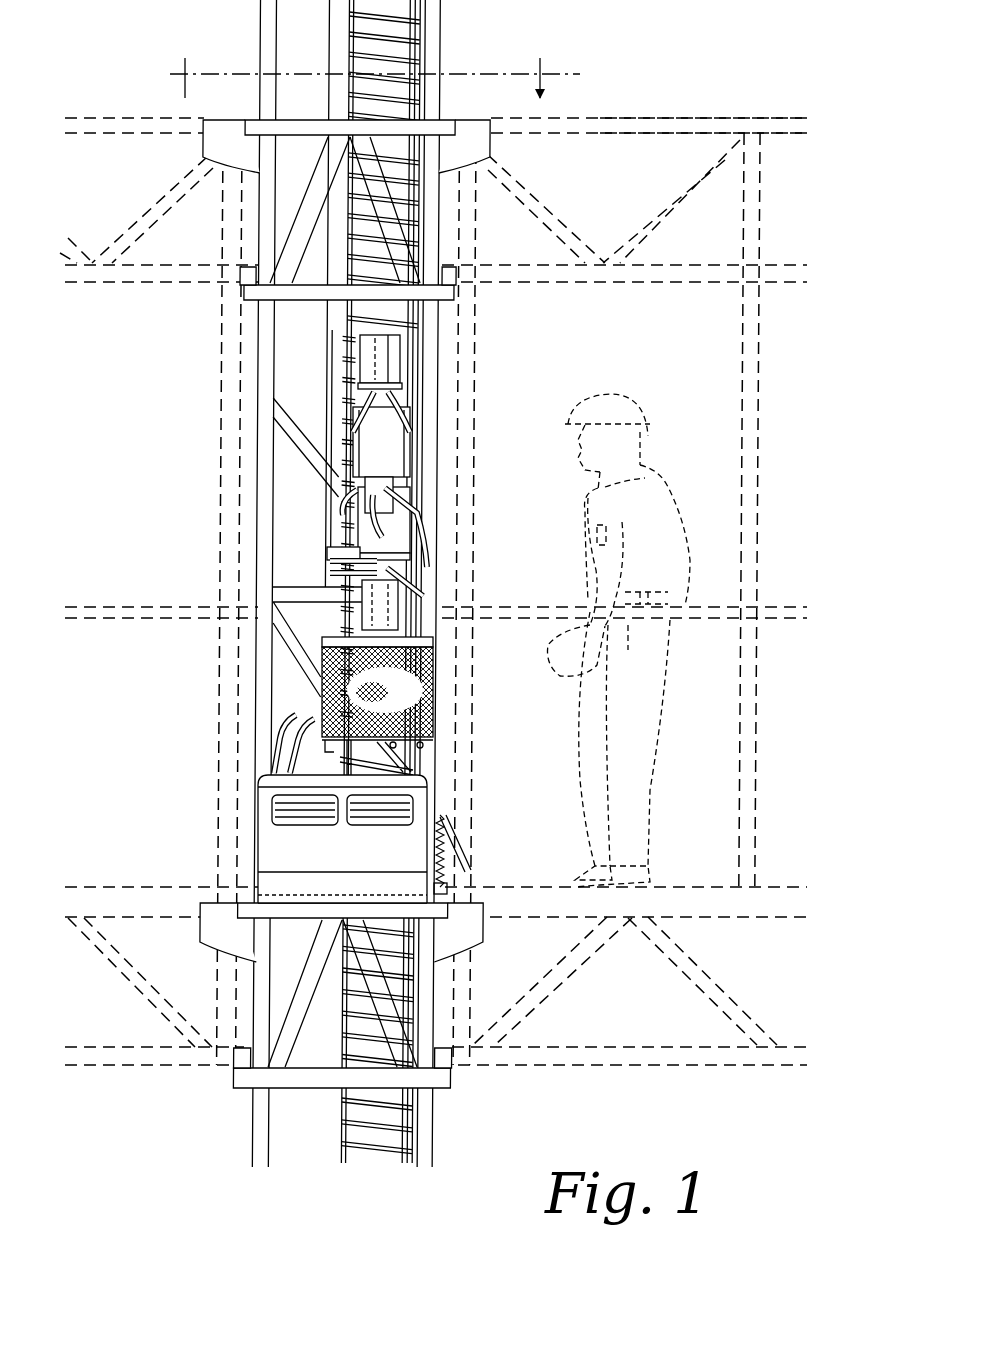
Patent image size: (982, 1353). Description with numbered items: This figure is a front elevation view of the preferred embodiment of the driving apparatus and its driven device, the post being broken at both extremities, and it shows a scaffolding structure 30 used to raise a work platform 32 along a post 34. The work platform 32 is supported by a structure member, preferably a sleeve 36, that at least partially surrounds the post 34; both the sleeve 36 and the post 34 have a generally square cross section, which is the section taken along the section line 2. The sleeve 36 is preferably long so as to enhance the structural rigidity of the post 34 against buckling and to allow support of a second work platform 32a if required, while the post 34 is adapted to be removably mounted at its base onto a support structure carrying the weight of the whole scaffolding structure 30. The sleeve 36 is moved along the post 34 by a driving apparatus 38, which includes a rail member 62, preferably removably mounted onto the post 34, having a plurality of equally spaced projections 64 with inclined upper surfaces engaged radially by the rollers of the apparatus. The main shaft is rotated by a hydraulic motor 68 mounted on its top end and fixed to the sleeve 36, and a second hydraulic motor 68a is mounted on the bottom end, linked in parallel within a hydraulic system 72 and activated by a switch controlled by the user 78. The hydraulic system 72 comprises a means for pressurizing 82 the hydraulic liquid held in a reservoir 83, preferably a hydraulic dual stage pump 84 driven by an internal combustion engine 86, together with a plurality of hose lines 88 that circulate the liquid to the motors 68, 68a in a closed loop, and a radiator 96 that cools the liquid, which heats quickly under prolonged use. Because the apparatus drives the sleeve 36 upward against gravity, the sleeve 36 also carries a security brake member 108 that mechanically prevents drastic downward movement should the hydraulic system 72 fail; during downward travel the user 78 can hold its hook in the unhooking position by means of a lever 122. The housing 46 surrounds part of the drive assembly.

The section line 2- 2 is at (362, 67).
The scaffolding structure 30 is at (222, 1107).
The work platform 32 is at (153, 1060).
The second work platform 32a is at (636, 117).
The post 34 is at (262, 31).
The sleeve 36 is at (452, 112).
The driving apparatus 38 is at (390, 465).
The drive unit housing 46 is at (390, 452).
The rail member 62 is at (425, 48).
The projections 64 is at (378, 1152).
The hydraulic motor 68 is at (372, 352).
The second hydraulic motor 68a is at (398, 600).
The hydraulic system 72 is at (275, 760).
The user 78 is at (660, 493).
The means for pressurizing 82 is at (405, 853).
The reservoir 83 is at (262, 922).
The hydraulic dual stage pump 84 is at (378, 820).
The internal combustion engine 86 is at (293, 818).
The hose lines 88 is at (403, 418).
The radiator 96 is at (420, 690).
The security brake member 108 is at (470, 818).
The lever 122 is at (455, 845).